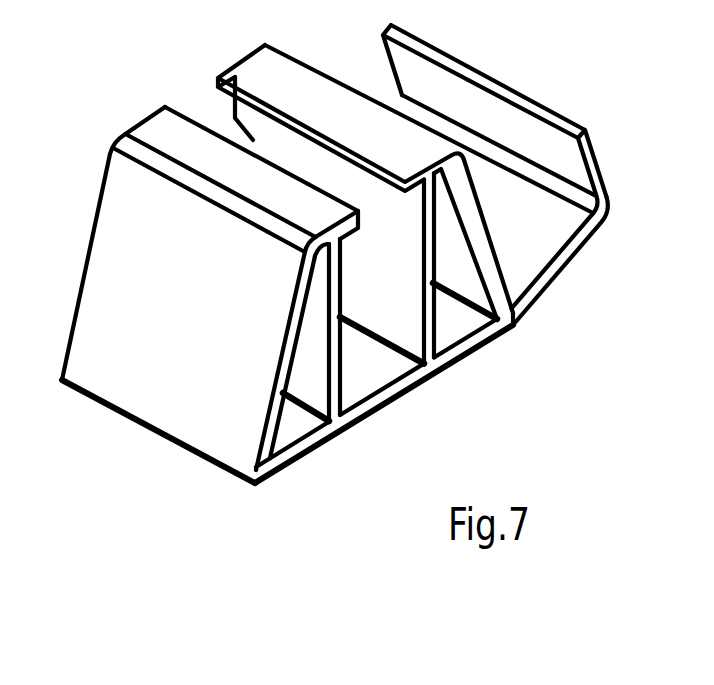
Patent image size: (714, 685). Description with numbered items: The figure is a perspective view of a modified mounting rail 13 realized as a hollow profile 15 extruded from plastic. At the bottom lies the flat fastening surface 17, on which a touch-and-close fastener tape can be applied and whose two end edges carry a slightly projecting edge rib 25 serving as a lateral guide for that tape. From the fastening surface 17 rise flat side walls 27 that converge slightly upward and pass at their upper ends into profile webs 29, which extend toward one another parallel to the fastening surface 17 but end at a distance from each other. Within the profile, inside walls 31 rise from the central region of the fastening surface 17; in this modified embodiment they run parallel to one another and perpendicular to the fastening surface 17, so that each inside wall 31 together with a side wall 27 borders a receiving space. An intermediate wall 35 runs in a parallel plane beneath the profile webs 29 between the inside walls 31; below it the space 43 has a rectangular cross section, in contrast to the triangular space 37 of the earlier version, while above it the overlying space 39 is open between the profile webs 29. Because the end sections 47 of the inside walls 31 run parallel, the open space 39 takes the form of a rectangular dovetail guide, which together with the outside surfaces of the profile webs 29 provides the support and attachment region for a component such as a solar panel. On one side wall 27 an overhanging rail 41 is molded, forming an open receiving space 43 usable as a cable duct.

The mounting rail 13 is at (100, 516).
The hollow profile 15 is at (100, 187).
The fastening surface 17 is at (312, 453).
The edge rib 25 is at (257, 486).
The side wall 27 is at (125, 316).
The profile web 29 is at (162, 131).
The inside wall 31 is at (330, 428).
The intermediate wall 35 is at (340, 300).
The triangular space 37 is at (389, 320).
The overlying space 39 is at (230, 124).
The overhanging rail 41 is at (608, 200).
The receiving space 43 is at (433, 181).
The end section 47 is at (337, 253).